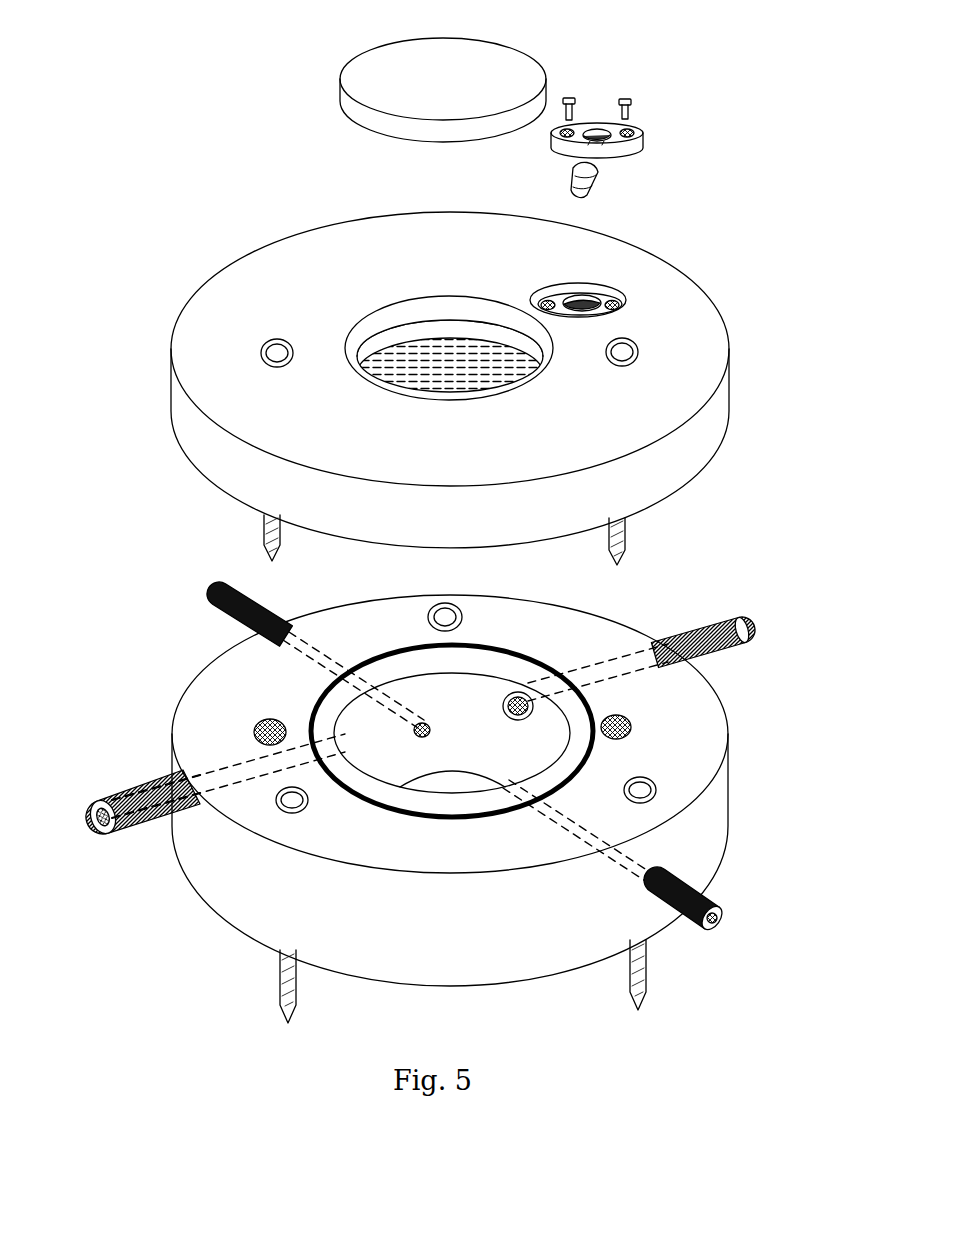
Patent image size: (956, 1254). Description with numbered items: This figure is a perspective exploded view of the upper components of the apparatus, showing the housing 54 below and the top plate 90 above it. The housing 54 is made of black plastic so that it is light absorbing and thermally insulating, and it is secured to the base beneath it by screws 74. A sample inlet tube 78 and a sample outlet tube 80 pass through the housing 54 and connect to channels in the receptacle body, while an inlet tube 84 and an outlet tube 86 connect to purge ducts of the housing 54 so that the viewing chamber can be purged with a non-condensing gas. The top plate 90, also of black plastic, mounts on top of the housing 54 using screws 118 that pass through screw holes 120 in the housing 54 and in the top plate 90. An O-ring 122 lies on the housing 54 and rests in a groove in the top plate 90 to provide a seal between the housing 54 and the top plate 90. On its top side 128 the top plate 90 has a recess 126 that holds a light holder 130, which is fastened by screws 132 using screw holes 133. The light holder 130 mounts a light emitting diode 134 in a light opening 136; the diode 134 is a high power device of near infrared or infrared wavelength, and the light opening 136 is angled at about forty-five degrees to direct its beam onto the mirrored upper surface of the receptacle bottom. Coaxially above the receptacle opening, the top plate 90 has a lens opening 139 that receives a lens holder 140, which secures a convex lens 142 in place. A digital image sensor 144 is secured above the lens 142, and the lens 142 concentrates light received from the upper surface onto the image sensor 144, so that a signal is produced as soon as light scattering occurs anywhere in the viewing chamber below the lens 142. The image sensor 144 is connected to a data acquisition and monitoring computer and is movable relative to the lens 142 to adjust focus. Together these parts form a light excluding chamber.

The housing 54 is at (722, 792).
The screws 74 is at (280, 803).
The sample inlet tube 78 is at (219, 594).
The sample outlet tube 80 is at (718, 918).
The inlet tube 84 is at (100, 800).
The outlet tube 86 is at (732, 616).
The top plate 90 is at (733, 404).
The screws 118 is at (637, 352).
The screw holes 120 is at (630, 725).
The O-ring 122 is at (310, 700).
The recess 126 is at (577, 288).
The top side 128 is at (362, 272).
The light holder 130 is at (643, 141).
The screws 132 is at (628, 100).
The screw holes 133 is at (622, 131).
The light emitting diode 134 is at (598, 175).
The light opening 136 is at (597, 130).
The lens opening 139 is at (437, 322).
The lens holder 140 is at (408, 368).
The convex lens 142 is at (410, 370).
The digital image sensor 144 is at (345, 97).